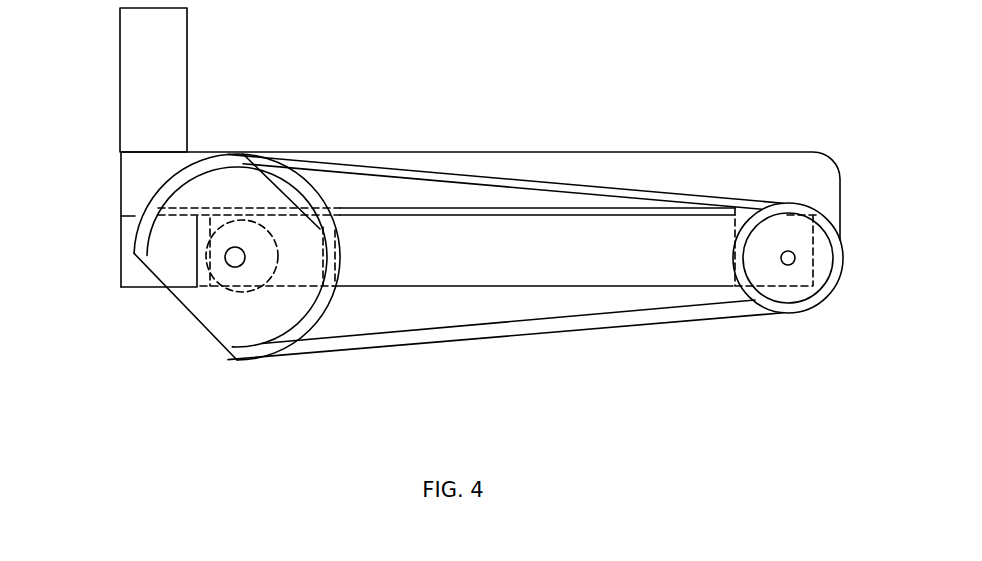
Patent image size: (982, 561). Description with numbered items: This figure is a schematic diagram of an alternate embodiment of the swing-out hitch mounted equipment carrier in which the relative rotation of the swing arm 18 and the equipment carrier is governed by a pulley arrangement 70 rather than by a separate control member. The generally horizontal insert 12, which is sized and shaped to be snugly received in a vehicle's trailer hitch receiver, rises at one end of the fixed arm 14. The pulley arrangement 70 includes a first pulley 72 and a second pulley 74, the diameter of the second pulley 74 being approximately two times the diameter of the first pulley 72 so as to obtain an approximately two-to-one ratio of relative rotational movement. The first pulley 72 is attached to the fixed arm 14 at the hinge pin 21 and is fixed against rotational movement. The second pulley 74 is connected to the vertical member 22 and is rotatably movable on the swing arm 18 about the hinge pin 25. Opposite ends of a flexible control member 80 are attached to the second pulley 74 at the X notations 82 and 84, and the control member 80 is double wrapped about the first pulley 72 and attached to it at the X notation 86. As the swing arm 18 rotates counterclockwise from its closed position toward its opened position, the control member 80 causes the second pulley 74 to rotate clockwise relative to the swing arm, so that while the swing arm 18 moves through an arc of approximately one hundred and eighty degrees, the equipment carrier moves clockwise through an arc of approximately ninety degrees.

The insert 12 is at (187, 70).
The fixed arm 14 is at (469, 152).
The vertical member 22 is at (120, 277).
The swing arm 18 is at (478, 287).
The pulley arrangement 70 is at (726, 108).
The second pulley 74 is at (312, 255).
The hinge pin 25 is at (233, 257).
The X notation (first attachment point) 82 is at (112, 247).
The X notation (second attachment point) 84 is at (230, 362).
The flexible control member 80 is at (457, 342).
The first pulley 72 is at (846, 253).
The X notation (control member attachment to first pulley) 86 is at (722, 254).
The hinge pin 21 is at (794, 263).